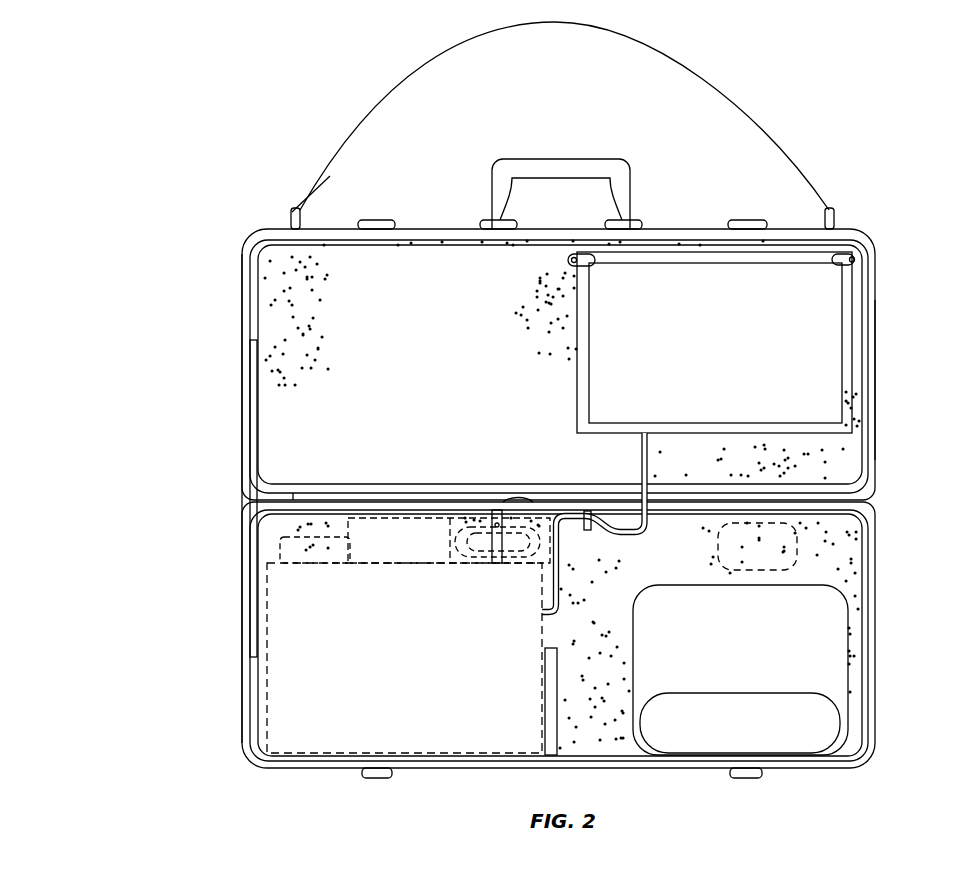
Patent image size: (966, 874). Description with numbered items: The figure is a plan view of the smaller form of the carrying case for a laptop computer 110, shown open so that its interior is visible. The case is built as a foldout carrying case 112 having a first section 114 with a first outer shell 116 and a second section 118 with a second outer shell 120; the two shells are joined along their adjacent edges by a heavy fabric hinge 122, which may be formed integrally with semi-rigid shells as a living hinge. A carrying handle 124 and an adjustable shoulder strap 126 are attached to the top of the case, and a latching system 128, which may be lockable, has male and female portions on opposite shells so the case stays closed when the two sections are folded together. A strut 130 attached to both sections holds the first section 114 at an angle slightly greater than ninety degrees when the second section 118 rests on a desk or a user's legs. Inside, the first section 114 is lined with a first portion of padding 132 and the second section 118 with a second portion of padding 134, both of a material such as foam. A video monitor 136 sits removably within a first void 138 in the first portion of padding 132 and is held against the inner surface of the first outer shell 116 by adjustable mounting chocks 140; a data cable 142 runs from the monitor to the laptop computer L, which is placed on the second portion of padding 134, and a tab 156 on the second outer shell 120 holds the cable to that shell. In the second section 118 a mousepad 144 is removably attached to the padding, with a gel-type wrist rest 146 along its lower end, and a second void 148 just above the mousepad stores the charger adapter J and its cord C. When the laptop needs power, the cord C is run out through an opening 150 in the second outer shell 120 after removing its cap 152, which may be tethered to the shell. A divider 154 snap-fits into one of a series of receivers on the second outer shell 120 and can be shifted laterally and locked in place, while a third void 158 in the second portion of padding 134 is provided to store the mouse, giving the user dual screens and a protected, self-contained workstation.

The carrying case for a laptop computer 110 is at (98, 276).
The foldout carrying case 112 is at (240, 330).
The first section 114 is at (862, 240).
The first outer shell 116 is at (878, 390).
The second section 118 is at (872, 505).
The second outer shell 120 is at (878, 522).
The hinge 122 is at (322, 500).
The carrying handle 124 is at (583, 165).
The shoulder strap 126 is at (728, 112).
The latching system 128 is at (742, 218).
The strut 130 is at (250, 500).
The first portion of padding 132 is at (272, 272).
The second portion of padding 134 is at (610, 728).
The video monitor 136 is at (825, 330).
The first void 138 is at (860, 292).
The mounting chocks 140 is at (862, 260).
The data cable 142 is at (641, 462).
The mousepad 144 is at (822, 650).
The wrist rest 146 is at (830, 722).
The second void 148 is at (348, 558).
The opening 150 is at (535, 505).
The cap 152 is at (498, 510).
The divider 154 is at (553, 692).
The tab 156 is at (590, 530).
The third void 158 is at (790, 547).
The charger adapter J is at (392, 528).
The cord C is at (480, 562).
The laptop computer L is at (420, 722).